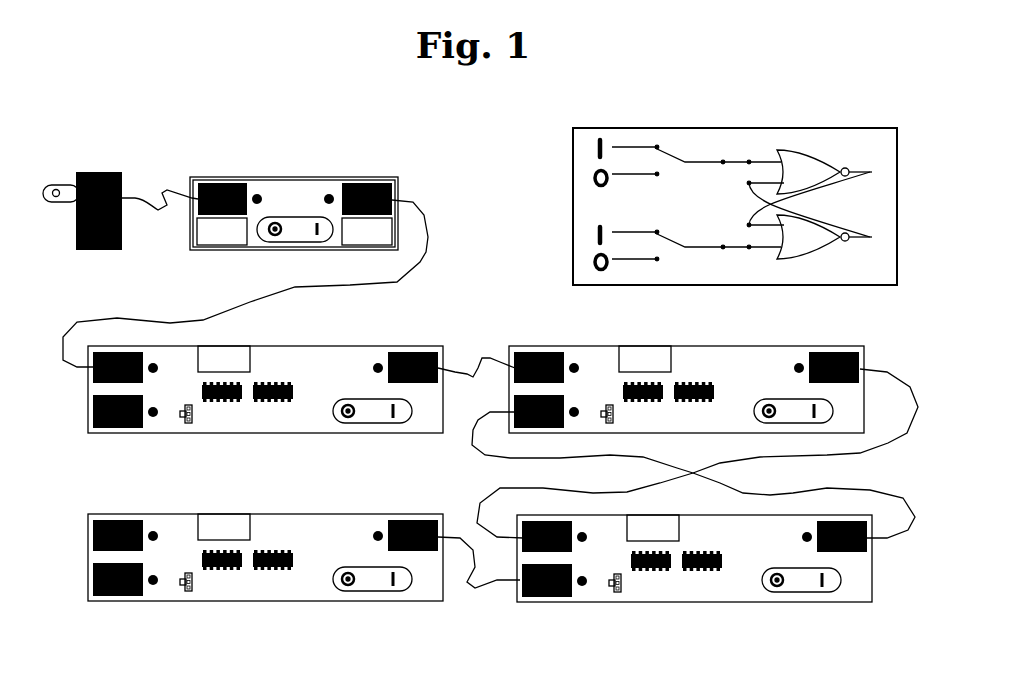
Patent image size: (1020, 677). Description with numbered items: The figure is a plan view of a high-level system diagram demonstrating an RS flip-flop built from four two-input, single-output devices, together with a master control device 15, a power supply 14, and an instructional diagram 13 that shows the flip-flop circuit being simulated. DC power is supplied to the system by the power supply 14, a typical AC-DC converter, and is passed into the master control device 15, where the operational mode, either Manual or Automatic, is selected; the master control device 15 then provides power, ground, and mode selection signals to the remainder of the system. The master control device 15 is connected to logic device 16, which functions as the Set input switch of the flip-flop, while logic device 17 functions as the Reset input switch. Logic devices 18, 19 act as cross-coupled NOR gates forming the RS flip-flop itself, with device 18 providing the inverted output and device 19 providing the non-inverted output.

The instructional diagram 13 is at (689, 206).
The power supply 14 is at (120, 189).
The master control device 15 is at (245, 248).
The logic device 16 is at (301, 413).
The logic device 17 is at (304, 582).
The logic device 18 is at (695, 420).
The logic device 19 is at (694, 583).